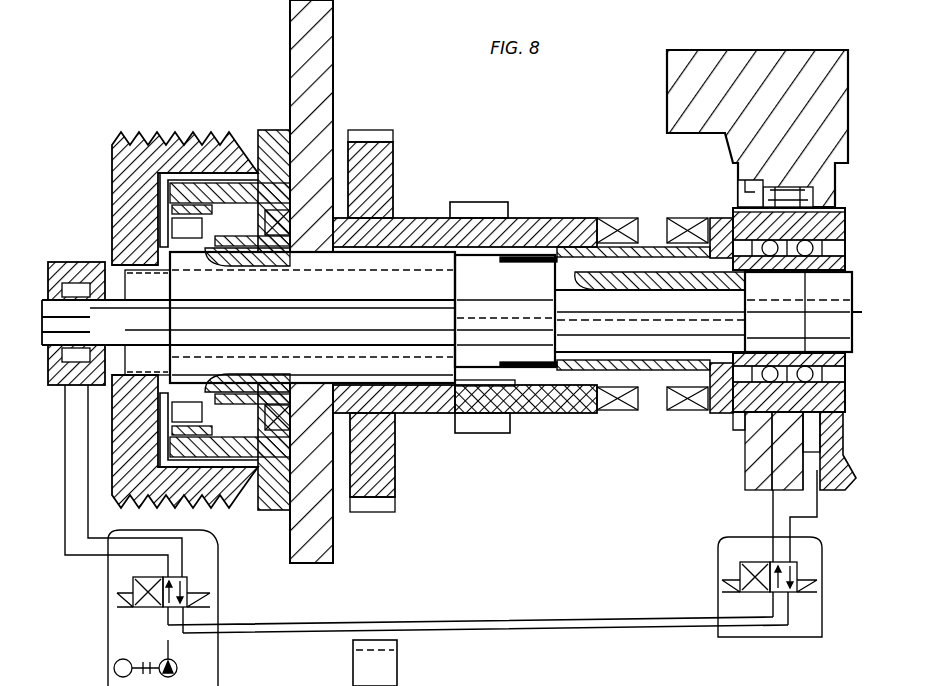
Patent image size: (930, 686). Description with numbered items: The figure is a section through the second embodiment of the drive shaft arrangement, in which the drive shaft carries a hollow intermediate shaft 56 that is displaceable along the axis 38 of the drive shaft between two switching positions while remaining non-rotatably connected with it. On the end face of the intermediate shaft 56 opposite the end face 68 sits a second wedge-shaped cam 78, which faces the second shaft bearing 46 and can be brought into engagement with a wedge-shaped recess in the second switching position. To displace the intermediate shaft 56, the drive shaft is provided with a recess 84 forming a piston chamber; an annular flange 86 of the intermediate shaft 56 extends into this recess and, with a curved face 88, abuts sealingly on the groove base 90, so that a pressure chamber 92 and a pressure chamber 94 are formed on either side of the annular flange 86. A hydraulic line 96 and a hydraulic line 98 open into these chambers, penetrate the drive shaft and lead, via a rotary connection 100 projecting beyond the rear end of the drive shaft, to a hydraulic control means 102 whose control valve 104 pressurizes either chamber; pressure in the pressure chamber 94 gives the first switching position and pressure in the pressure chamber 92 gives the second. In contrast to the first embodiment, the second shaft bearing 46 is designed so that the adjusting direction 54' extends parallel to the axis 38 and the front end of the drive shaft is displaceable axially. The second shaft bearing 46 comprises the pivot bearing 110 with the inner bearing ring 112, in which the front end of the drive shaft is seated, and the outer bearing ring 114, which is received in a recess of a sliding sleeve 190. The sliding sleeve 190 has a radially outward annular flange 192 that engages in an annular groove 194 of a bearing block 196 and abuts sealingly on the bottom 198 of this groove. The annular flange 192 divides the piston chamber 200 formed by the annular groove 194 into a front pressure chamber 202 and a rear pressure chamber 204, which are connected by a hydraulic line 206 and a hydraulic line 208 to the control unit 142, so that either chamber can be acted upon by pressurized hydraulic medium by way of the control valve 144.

The axis 38 is at (785, 320).
The second shaft bearing 46 is at (692, 193).
The adjusting direction 54' is at (609, 481).
The intermediate shaft 56 is at (426, 216).
The end face 68 is at (349, 663).
The second wedge-shaped cam 78 is at (617, 413).
The recess 84 is at (512, 298).
The annular flange 86 is at (512, 416).
The curved face 88 is at (520, 262).
The groove base 90 is at (506, 311).
The pressure chamber 92 is at (465, 433).
The pressure chamber 94 is at (543, 412).
The hydraulic line 96 is at (414, 300).
The hydraulic line 98 is at (362, 330).
The rotary connection 100 is at (82, 260).
The hydraulic control means 102 is at (117, 605).
The control valve 104 is at (133, 588).
The pivot bearing 110 is at (703, 220).
The inner bearing ring 112 is at (745, 331).
The outer bearing ring 114 is at (732, 212).
The control unit 142 is at (800, 634).
The control valve 144 is at (738, 580).
The sliding sleeve 190 is at (817, 190).
The annular flange 192 is at (760, 190).
The annular groove 194 is at (800, 200).
The bearing block 196 is at (755, 468).
The bottom 198 is at (832, 494).
The piston chamber 200 is at (818, 347).
The front pressure chamber 202 is at (817, 522).
The rear pressure chamber 204 is at (753, 425).
The hydraulic line 206 is at (789, 463).
The hydraulic line 208 is at (772, 515).